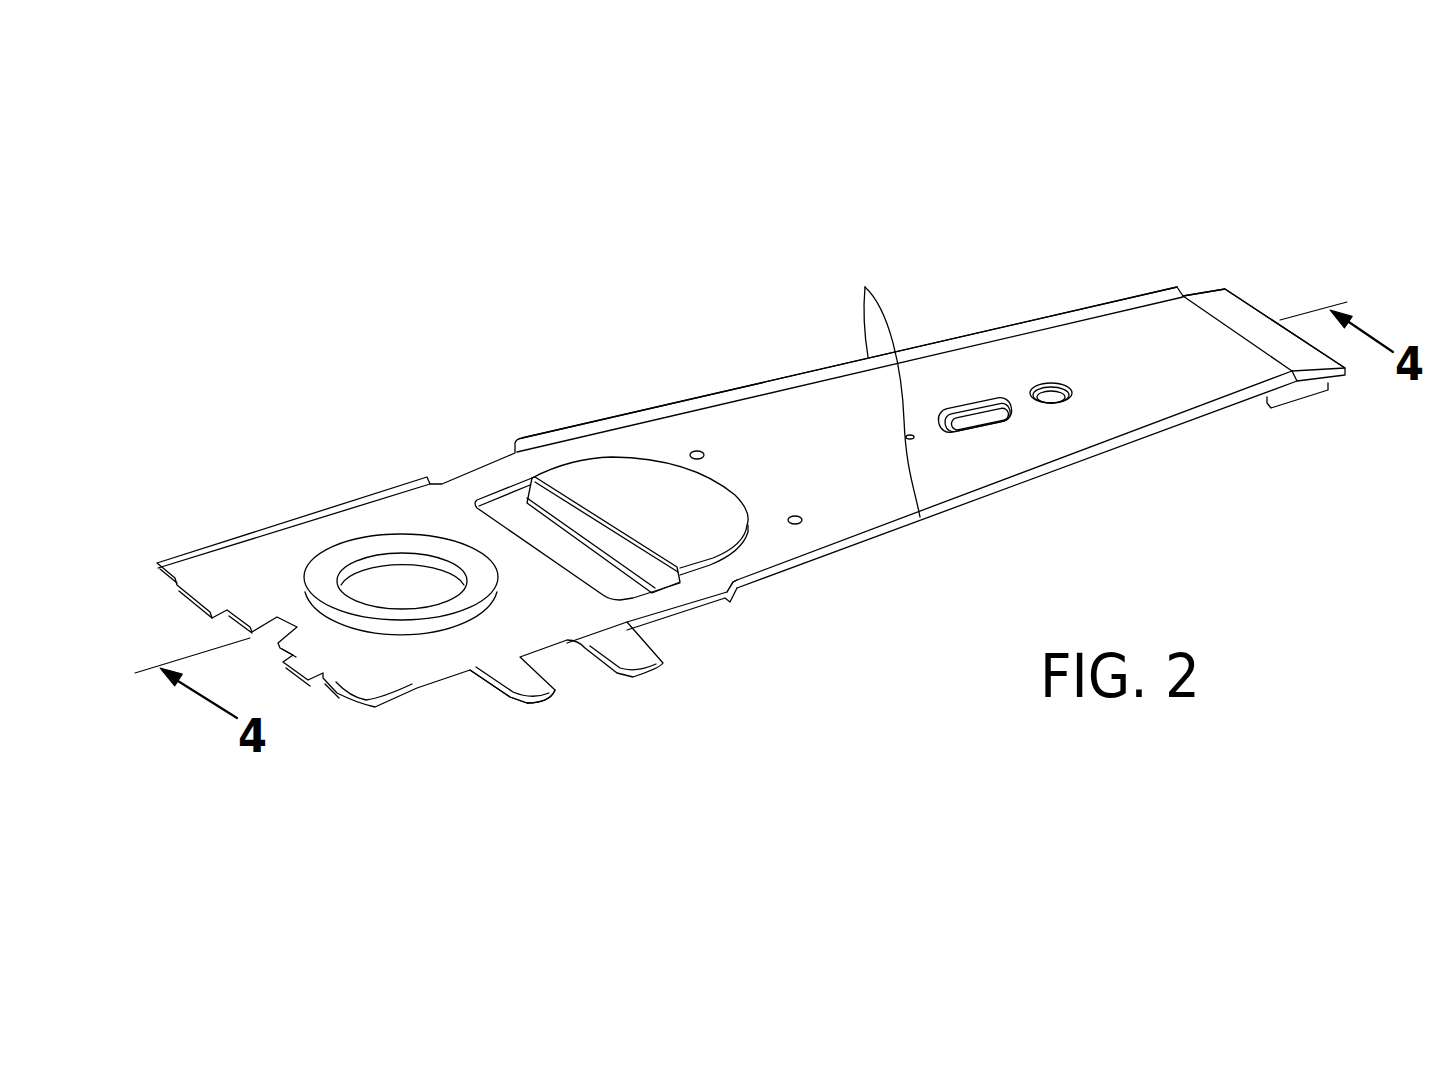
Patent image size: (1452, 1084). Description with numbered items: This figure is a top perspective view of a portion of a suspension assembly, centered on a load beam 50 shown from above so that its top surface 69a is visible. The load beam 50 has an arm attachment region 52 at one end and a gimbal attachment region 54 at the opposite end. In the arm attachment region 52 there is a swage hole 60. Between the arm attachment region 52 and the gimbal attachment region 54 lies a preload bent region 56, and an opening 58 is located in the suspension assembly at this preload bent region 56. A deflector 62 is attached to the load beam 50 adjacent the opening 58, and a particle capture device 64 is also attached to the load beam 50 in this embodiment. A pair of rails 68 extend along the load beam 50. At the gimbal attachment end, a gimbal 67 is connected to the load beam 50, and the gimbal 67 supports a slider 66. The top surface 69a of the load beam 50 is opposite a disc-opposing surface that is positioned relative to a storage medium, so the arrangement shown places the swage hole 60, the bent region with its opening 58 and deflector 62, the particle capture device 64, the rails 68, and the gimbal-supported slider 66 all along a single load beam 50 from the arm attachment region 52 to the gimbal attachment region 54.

The load beam 50 is at (808, 308).
The arm attachment region 52 is at (457, 703).
The gimbal attachment region 54 is at (1082, 293).
The preload bent region 56 is at (690, 623).
The opening 58 is at (537, 530).
The swage hole 60 is at (383, 547).
The deflector 62 is at (590, 523).
The particle capture device 64 is at (623, 467).
The slider 66 is at (1302, 398).
The gimbal 67 is at (1228, 306).
The pair of rails 68 is at (885, 382).
The top surface 69a is at (782, 423).